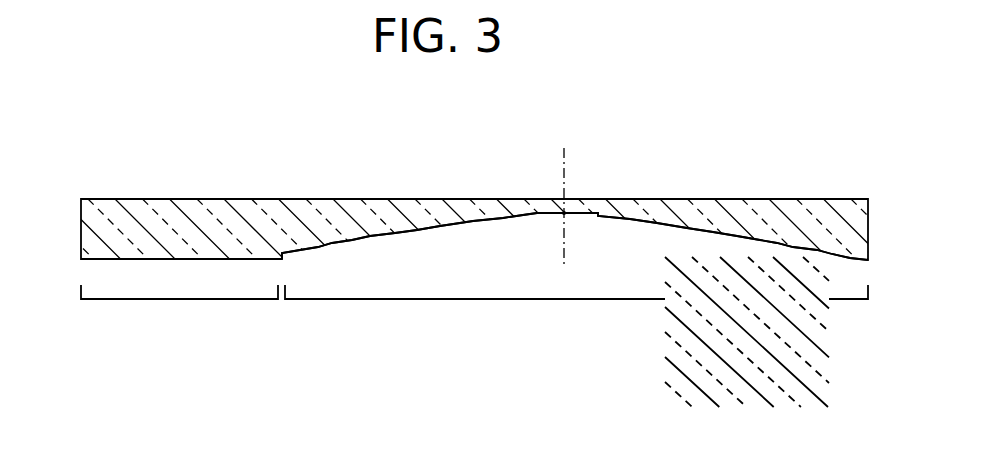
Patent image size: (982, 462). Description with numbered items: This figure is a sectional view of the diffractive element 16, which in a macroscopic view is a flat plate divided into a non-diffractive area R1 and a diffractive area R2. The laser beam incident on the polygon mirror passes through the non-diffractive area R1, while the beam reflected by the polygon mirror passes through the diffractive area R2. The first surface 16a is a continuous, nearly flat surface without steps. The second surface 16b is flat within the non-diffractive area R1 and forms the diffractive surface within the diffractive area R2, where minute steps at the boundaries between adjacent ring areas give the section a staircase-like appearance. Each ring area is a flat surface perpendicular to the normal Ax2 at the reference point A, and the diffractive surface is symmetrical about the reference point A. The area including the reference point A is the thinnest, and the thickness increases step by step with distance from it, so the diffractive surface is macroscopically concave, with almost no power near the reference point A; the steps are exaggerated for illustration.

The diffractive element 16 is at (193, 200).
The first surface 16a is at (371, 199).
The second surface 16b is at (410, 235).
The reference point A is at (564, 213).
The normal Ax2 is at (560, 179).
The non-diffractive area R1 is at (178, 300).
The diffractive area R2 is at (576, 300).